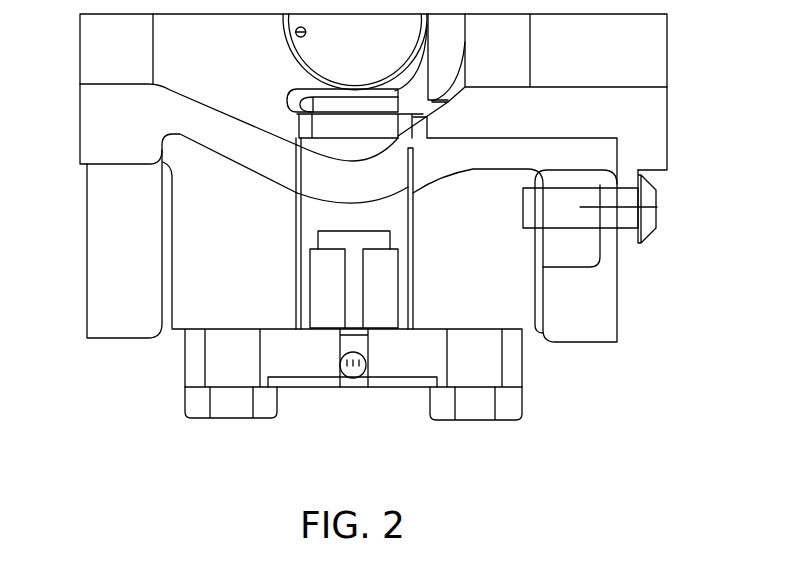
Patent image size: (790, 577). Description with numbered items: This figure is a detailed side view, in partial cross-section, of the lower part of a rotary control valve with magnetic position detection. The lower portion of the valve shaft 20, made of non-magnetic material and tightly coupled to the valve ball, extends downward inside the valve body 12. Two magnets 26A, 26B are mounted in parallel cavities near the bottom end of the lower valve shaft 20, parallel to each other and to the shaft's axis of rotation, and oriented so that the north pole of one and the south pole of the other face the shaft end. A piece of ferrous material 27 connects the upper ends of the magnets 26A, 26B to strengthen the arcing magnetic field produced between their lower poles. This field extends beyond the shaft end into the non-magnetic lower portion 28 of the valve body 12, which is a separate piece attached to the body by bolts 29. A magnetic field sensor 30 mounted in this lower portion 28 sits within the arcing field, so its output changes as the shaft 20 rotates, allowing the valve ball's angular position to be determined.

The valve body 12 is at (88, 127).
The lower portion of the valve shaft 20 is at (412, 226).
The magnet 26A is at (388, 292).
The magnet 26B is at (328, 287).
The piece of ferrous material 27 is at (330, 230).
The lower portion of the valve body 28 is at (513, 360).
The bolts 29 is at (213, 418).
The magnetic field sensor 30 is at (356, 379).